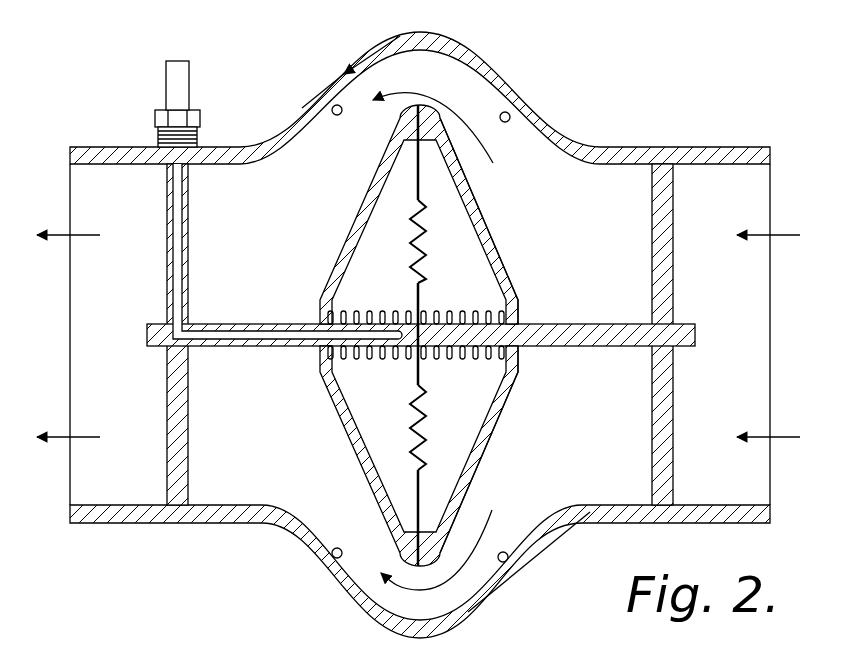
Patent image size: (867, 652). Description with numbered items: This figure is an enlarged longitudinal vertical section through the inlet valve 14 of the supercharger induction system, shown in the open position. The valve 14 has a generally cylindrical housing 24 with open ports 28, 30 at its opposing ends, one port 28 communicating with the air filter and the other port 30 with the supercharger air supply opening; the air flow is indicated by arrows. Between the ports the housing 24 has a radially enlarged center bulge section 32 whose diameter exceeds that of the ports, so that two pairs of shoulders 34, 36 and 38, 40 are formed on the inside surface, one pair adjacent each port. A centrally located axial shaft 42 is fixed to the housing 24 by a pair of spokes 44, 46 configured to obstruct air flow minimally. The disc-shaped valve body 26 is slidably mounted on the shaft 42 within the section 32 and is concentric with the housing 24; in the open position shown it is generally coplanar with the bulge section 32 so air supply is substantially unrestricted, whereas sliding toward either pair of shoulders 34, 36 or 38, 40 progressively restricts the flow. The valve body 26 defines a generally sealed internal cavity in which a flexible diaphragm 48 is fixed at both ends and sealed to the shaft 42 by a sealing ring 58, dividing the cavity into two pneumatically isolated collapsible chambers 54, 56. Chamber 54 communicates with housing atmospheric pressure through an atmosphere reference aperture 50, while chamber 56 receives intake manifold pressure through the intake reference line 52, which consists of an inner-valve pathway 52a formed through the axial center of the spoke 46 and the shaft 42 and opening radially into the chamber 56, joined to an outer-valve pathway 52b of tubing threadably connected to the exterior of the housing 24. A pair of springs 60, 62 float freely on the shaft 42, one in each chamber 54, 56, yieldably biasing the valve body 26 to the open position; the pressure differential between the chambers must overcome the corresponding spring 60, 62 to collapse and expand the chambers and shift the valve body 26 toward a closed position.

The valve 14 is at (541, 71).
The housing 24 is at (612, 155).
The valve body 26 is at (381, 173).
The port 28 is at (752, 300).
The port 30 is at (88, 305).
The radially enlarged section 32 is at (466, 33).
The shoulder 34 is at (511, 124).
The shoulder 36 is at (506, 558).
The shoulder 38 is at (331, 112).
The shoulder 40 is at (333, 553).
The axial shaft 42 is at (604, 324).
The spoke 44 is at (663, 405).
The spoke 46 is at (178, 399).
The flexible diaphragm 48 is at (428, 222).
The atmosphere reference aperture 50 is at (481, 228).
The intake reference line 52 is at (164, 54).
The inner-valve pathway 52a is at (178, 227).
The outer-valve pathway 52b is at (168, 92).
The chamber 54 is at (471, 417).
The chamber 56 is at (373, 421).
The sealing ring 58 is at (413, 316).
The spring 60 is at (486, 312).
The spring 62 is at (362, 313).